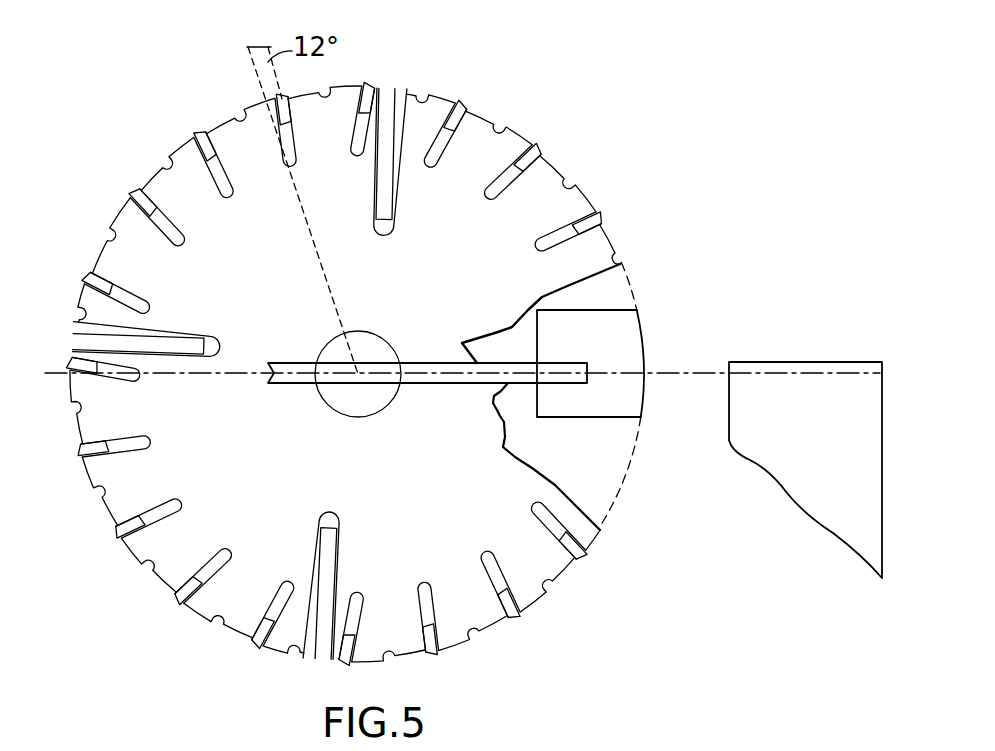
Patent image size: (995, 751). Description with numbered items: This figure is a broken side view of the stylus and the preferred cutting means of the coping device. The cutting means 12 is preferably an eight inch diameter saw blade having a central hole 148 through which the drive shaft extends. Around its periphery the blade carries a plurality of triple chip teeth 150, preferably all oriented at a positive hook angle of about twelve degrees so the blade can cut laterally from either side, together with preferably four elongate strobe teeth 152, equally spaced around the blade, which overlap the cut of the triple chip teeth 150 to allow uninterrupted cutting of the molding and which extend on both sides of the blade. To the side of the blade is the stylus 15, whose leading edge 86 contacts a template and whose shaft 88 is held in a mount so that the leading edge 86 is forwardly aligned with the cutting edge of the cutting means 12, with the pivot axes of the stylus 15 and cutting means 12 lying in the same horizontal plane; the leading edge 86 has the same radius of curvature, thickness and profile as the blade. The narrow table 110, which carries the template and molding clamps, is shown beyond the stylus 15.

The cutting means 12 is at (173, 103).
The stylus 15 is at (628, 321).
The leading edge 86 is at (643, 358).
The shaft 88 is at (517, 392).
The table 110 is at (760, 362).
The central hole 148 is at (355, 412).
The triple chip teeth 150 is at (290, 95).
The strobe teeth 152 is at (402, 108).